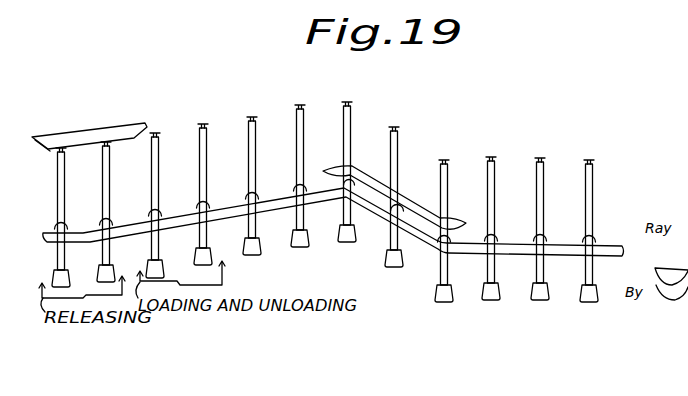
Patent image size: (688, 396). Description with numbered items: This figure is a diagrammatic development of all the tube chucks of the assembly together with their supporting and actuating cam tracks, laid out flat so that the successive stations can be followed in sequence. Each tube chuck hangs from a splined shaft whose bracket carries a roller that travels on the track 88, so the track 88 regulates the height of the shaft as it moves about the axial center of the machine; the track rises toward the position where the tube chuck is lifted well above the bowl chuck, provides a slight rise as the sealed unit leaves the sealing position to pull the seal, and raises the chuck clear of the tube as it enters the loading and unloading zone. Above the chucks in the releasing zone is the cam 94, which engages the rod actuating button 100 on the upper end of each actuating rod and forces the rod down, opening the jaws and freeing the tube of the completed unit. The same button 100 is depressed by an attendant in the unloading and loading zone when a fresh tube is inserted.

The track 88 is at (222, 210).
The cam 94 is at (107, 114).
The rod actuating button 100 is at (250, 117).